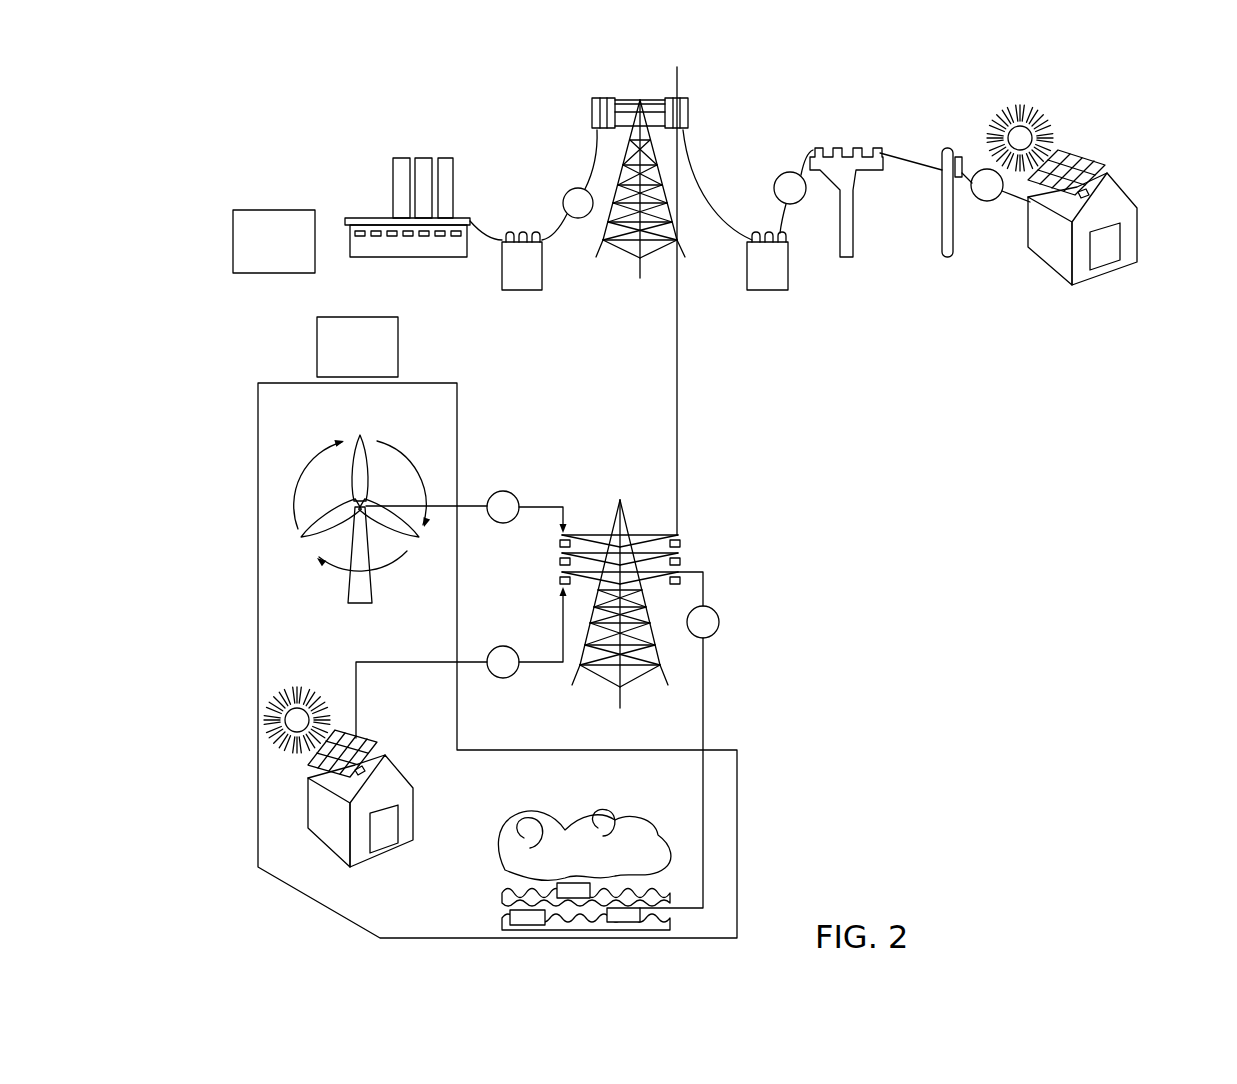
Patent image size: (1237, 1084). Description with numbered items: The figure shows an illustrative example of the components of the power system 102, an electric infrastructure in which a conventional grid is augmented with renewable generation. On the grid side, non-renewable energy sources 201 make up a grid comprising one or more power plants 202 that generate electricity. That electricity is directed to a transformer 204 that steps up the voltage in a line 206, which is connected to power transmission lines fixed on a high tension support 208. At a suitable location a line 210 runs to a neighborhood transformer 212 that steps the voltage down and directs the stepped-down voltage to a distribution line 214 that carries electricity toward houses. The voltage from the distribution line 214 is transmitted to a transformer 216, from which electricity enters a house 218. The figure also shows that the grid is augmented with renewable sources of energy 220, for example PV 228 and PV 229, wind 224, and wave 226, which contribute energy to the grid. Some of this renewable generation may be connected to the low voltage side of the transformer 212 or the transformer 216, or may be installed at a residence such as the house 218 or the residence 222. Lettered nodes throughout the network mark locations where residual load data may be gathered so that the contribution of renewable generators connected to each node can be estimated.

The power system 102 is at (1173, 87).
The non-renewable energy sources 201 is at (275, 209).
The power plant 202 is at (360, 218).
The transformer 204 is at (521, 292).
The line 206 is at (588, 163).
The high tension support 208 is at (640, 92).
The line 210 is at (694, 159).
The neighborhood transformer 212 is at (765, 292).
The distribution line 214 is at (908, 162).
The transformer 216 is at (947, 257).
The house 218 is at (1108, 275).
The renewable sources of energy 220 is at (258, 406).
The residence 222 is at (387, 853).
The wind 224 is at (313, 463).
The wave 226 is at (566, 932).
The PV 228 is at (308, 764).
The PV 229 is at (1107, 161).